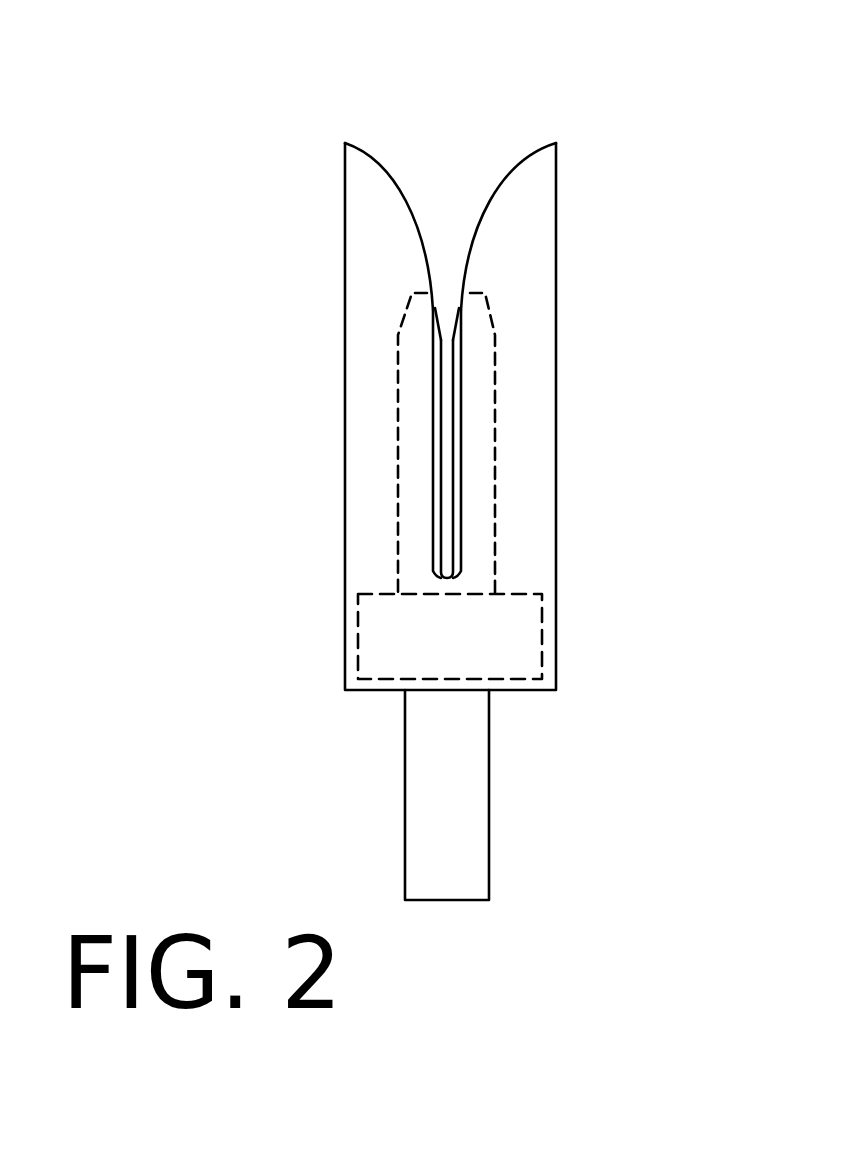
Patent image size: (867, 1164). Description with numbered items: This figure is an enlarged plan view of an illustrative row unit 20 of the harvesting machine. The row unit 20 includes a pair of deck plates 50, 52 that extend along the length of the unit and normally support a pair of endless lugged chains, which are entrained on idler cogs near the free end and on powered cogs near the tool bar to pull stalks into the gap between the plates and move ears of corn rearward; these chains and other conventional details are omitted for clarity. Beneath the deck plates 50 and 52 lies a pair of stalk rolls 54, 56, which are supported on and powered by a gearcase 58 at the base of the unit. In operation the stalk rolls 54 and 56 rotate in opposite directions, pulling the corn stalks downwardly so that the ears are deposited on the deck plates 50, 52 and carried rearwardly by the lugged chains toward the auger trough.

The row unit 20 is at (450, 115).
The deck plate 50 is at (385, 260).
The deck plate 52 is at (533, 220).
The stalk roll 54 is at (410, 483).
The stalk roll 56 is at (480, 397).
The gearcase 58 is at (507, 660).